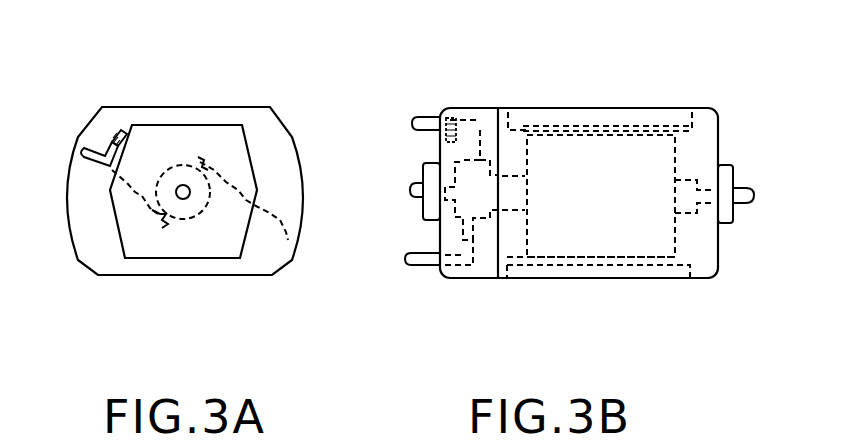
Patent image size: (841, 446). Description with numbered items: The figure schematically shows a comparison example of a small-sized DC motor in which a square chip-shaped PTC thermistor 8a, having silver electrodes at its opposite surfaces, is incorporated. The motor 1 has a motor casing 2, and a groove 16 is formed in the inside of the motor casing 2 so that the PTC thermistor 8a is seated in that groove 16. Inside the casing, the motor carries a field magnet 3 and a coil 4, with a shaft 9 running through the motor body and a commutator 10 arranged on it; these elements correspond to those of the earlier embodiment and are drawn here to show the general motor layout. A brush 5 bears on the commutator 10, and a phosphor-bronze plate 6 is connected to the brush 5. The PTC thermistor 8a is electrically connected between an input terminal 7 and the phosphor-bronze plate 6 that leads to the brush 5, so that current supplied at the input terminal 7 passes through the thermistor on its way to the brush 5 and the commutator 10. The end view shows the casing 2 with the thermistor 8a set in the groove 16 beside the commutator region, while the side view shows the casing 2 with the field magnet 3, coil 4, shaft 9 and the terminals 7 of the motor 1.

In FIG. 3B, the motor body 1 is at (671, 108).
In FIG. 3A, the motor casing 2 is at (221, 107).
In FIG. 3B, the motor casing 2 is at (468, 108).
In FIG. 3B, the field magnet 3 is at (655, 272).
In FIG. 3B, the coil 4 is at (665, 165).
In FIG. 3A, the brush 5 is at (183, 219).
In FIG. 3B, the brush 5 is at (483, 227).
In FIG. 3A, the phosphor-bronze plate 6 is at (152, 214).
In FIG. 3B, the phosphor-bronze plate 6 is at (480, 230).
In FIG. 3A, the input terminal 7 is at (108, 164).
In FIG. 3B, the input terminal 7 is at (420, 266).
In FIG. 3A, the PTC thermistor 8a is at (121, 131).
In FIG. 3B, the PTC thermistor 8a is at (440, 104).
In FIG. 3B, the shaft 9 is at (412, 190).
In FIG. 3B, the commutator 10 is at (506, 146).
In FIG. 3A, the groove 16 is at (92, 152).